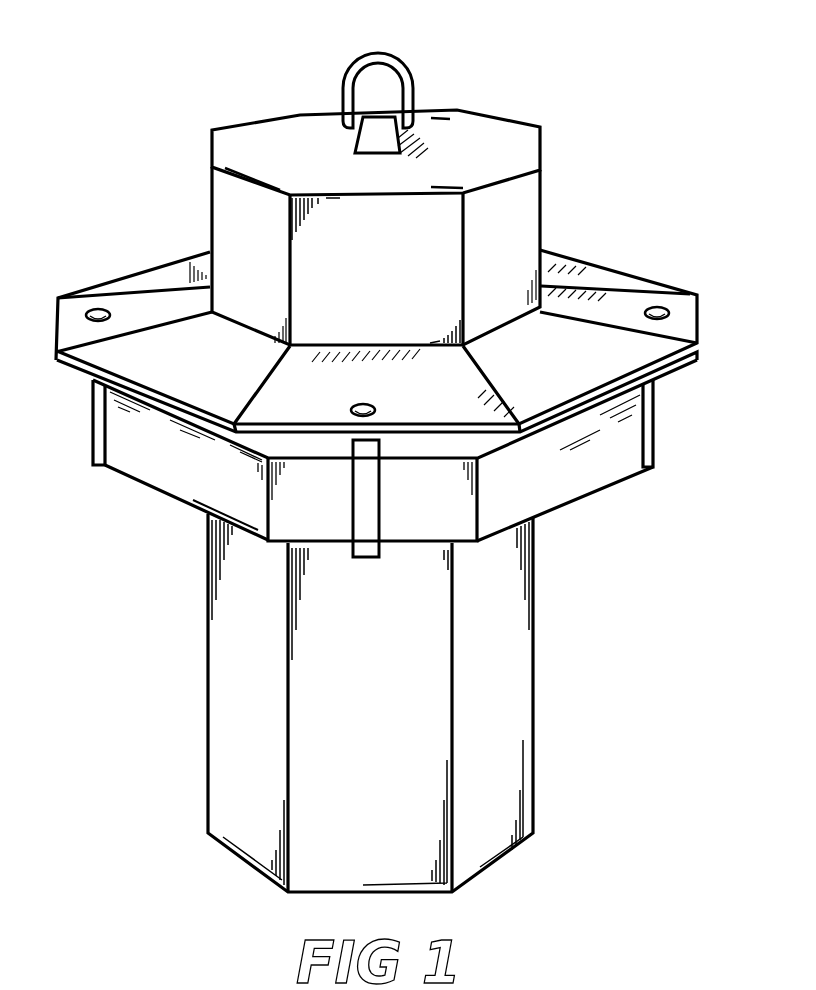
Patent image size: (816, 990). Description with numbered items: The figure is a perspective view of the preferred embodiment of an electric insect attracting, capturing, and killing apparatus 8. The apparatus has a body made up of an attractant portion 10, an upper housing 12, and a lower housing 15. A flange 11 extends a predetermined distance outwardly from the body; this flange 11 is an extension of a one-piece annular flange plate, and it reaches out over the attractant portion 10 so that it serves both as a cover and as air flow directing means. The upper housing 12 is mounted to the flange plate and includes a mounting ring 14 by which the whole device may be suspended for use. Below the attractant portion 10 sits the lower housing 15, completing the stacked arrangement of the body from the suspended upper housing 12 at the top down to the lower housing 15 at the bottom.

The electric insect attracting, capturing, and killing apparatus 8 is at (98, 268).
The attractant portion 10 is at (603, 463).
The flange 11 is at (699, 322).
The upper housing 12 is at (545, 187).
The mounting ring 14 is at (390, 54).
The lower housing 15 is at (513, 733).